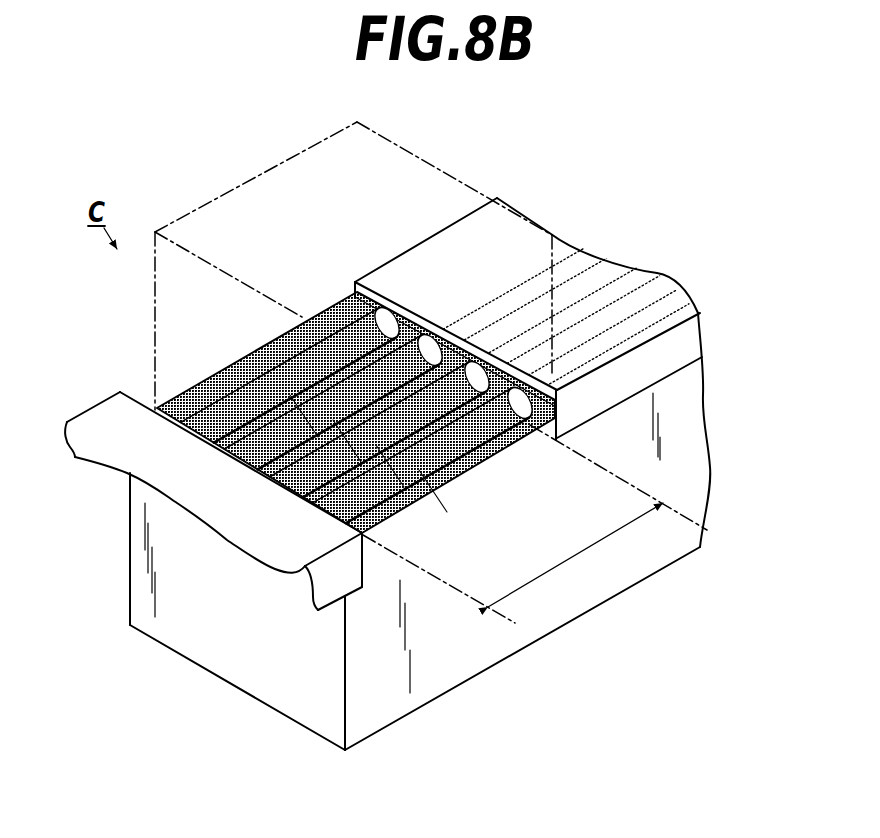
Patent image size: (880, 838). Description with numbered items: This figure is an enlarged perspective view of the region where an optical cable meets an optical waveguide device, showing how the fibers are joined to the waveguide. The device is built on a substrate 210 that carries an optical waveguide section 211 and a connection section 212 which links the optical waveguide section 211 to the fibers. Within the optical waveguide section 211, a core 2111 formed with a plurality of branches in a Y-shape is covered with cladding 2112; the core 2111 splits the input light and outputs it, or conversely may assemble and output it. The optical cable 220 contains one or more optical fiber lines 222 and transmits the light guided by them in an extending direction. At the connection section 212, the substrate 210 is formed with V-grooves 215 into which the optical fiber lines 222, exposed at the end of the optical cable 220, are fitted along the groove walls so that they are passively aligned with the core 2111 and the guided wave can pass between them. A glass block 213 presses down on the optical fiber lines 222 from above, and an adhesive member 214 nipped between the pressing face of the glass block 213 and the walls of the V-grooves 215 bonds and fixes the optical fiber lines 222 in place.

The substrate 210 is at (548, 608).
The optical waveguide section 211 is at (665, 503).
The connection section 212 is at (535, 524).
The glass block 213 is at (242, 182).
The adhesive member 214 is at (437, 473).
The V-grooves 215 is at (332, 358).
The optical cable 220 is at (113, 405).
The optical fiber line 222 is at (278, 452).
The core 2111 is at (672, 287).
The cladding 2112 is at (448, 253).